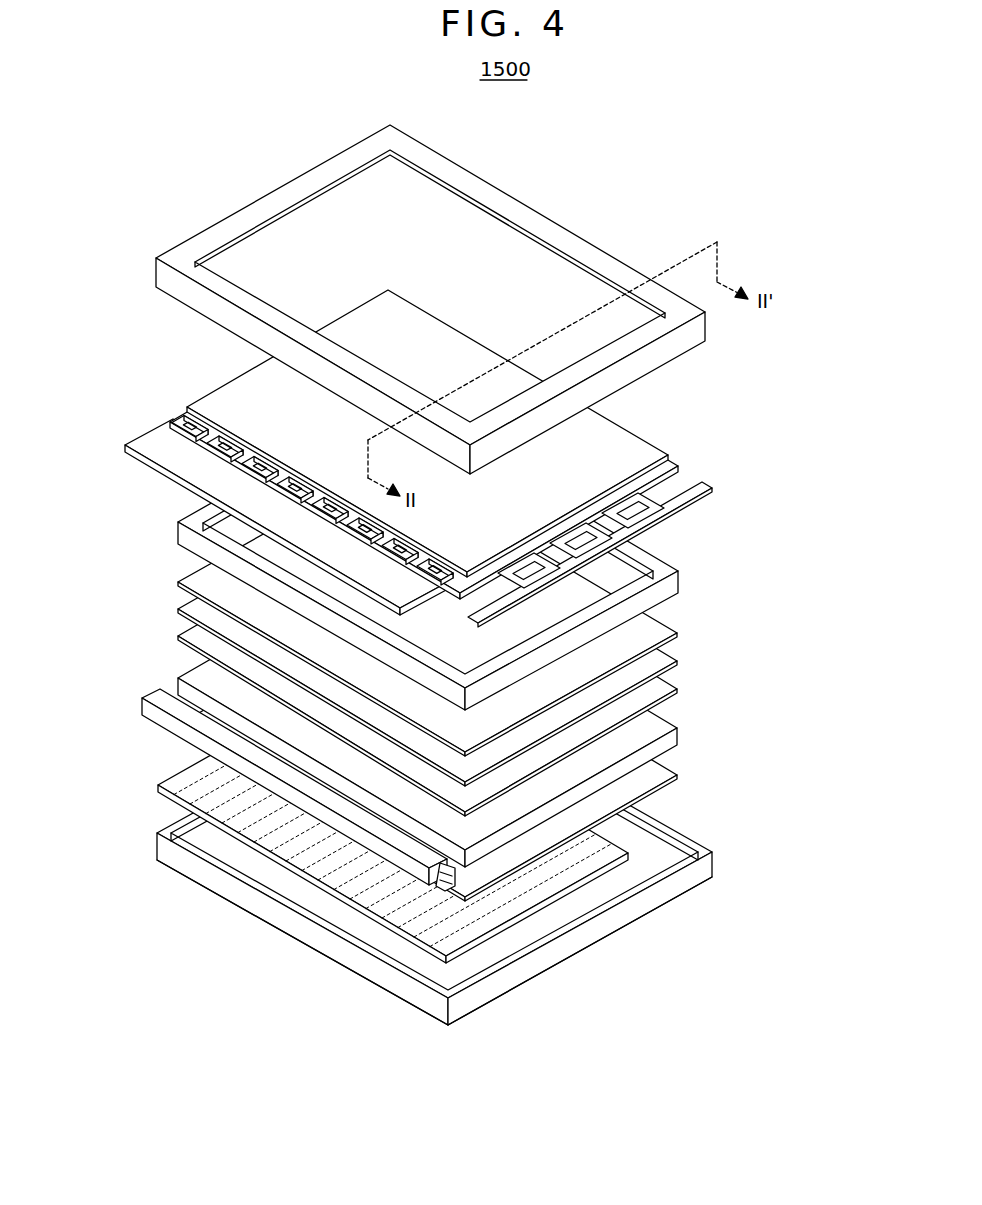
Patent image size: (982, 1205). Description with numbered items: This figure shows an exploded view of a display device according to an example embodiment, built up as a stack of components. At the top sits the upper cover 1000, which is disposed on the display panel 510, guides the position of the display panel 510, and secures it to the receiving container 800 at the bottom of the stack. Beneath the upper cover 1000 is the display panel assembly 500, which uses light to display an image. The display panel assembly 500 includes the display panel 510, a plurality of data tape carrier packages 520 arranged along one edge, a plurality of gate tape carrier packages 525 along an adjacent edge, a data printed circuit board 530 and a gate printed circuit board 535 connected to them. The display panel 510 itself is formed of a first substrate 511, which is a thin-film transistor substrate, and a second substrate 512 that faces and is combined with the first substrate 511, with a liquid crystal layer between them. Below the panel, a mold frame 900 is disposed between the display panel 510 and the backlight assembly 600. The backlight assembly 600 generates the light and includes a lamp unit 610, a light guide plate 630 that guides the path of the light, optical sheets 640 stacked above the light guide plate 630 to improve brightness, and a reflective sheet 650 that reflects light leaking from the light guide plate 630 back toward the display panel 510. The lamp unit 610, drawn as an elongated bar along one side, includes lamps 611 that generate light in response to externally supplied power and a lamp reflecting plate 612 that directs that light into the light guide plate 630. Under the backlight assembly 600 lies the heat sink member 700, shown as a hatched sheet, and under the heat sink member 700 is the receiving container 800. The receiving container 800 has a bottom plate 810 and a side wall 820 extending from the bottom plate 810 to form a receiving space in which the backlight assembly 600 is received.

The upper cover 1000 is at (618, 234).
The display panel assembly 500 is at (435, 458).
The display panel 510 is at (435, 444).
The first substrate 511 is at (676, 466).
The second substrate 512 is at (655, 452).
The data tape carrier packages 520 is at (190, 424).
The gate tape carrier packages 525 is at (688, 500).
The data printed circuit board 530 is at (130, 453).
The gate printed circuit board 535 is at (705, 489).
The mold frame 900 is at (690, 572).
The backlight assembly 600 is at (451, 752).
The lamp unit 610 is at (298, 855).
The lamps 611 is at (455, 882).
The lamp reflecting plate 612 is at (200, 706).
The light guide plate 630 is at (690, 745).
The optical sheets 640 is at (172, 570).
The reflective sheet 650 is at (685, 790).
The heat sink member 700 is at (323, 860).
The receiving container 800 is at (477, 856).
The bottom plate 810 is at (565, 950).
The side wall 820 is at (648, 895).